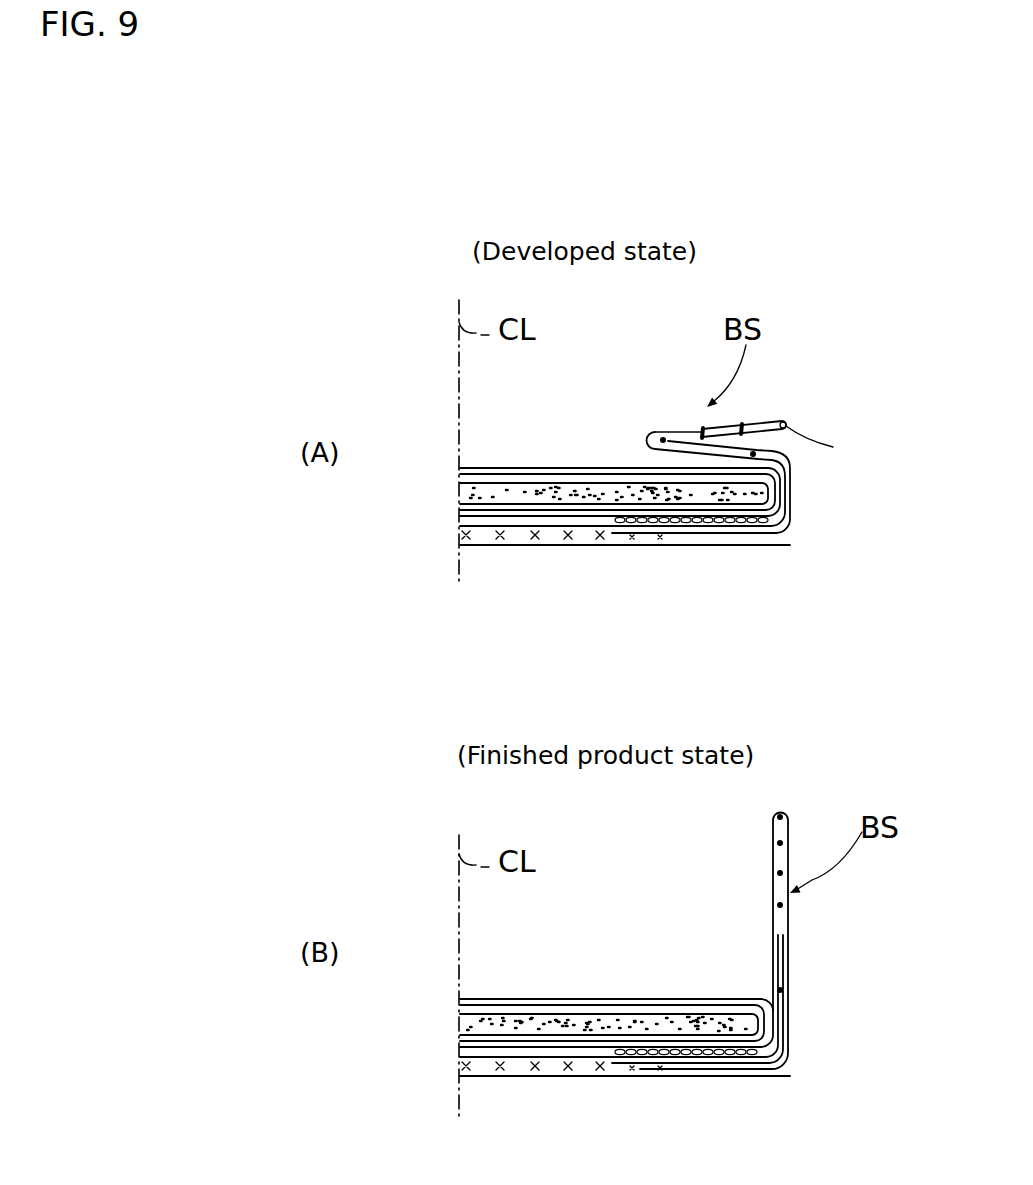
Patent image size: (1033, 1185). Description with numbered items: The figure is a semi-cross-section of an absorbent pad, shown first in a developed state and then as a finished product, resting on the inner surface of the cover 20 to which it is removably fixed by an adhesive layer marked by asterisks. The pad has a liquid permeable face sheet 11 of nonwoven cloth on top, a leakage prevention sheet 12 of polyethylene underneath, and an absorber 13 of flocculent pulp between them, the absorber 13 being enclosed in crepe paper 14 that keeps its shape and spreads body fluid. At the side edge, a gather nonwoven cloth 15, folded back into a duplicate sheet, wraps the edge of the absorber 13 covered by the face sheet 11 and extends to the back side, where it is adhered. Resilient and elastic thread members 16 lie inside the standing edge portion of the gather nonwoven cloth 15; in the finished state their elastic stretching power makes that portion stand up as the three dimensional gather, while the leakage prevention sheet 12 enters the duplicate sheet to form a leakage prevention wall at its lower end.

The liquid permeable face sheet 11 is at (583, 468).
The leakage prevention sheet 12 is at (484, 520).
The absorber 13 is at (611, 490).
The crepe paper 14 is at (535, 480).
The gather nonwoven cloth 15 is at (745, 426).
The resilient and elastic thread members 16 is at (703, 432).
The cover 20 is at (548, 547).